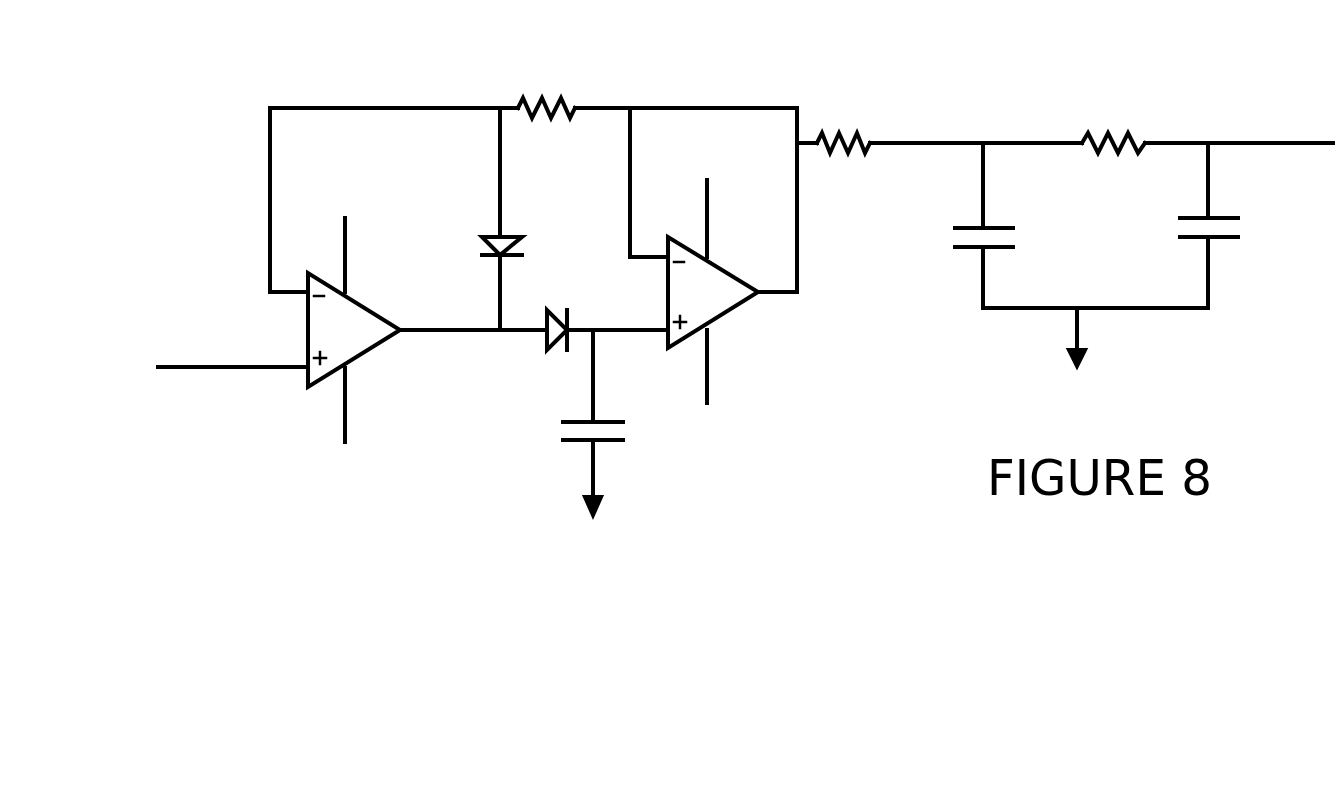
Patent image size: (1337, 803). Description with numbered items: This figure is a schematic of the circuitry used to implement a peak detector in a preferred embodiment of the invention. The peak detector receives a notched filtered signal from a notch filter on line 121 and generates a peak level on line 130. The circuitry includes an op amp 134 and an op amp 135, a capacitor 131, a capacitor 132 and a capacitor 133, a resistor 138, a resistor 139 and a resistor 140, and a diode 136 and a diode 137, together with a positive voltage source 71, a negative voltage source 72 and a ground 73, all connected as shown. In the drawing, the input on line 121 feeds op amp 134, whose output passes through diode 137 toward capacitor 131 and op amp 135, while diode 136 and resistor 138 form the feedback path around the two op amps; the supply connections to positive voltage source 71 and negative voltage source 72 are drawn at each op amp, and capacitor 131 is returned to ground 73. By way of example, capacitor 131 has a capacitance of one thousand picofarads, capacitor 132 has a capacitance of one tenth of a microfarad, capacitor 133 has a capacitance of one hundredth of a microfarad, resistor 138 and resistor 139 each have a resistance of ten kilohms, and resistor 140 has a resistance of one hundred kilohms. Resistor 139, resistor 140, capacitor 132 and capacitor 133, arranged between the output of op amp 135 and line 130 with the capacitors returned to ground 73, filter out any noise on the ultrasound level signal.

The line 121 is at (172, 354).
The op amp 134 is at (298, 332).
The op amp 135 is at (656, 295).
The diode 136 is at (477, 250).
The diode 137 is at (550, 298).
The resistor 138 is at (550, 80).
The resistor 139 is at (847, 122).
The resistor 140 is at (1108, 121).
The capacitor 131 is at (548, 434).
The capacitor 132 is at (937, 239).
The capacitor 133 is at (1170, 232).
The line 130 is at (1285, 128).
The positive voltage source 71 is at (342, 424).
The negative voltage source 72 is at (342, 241).
The ground 73 is at (584, 508).